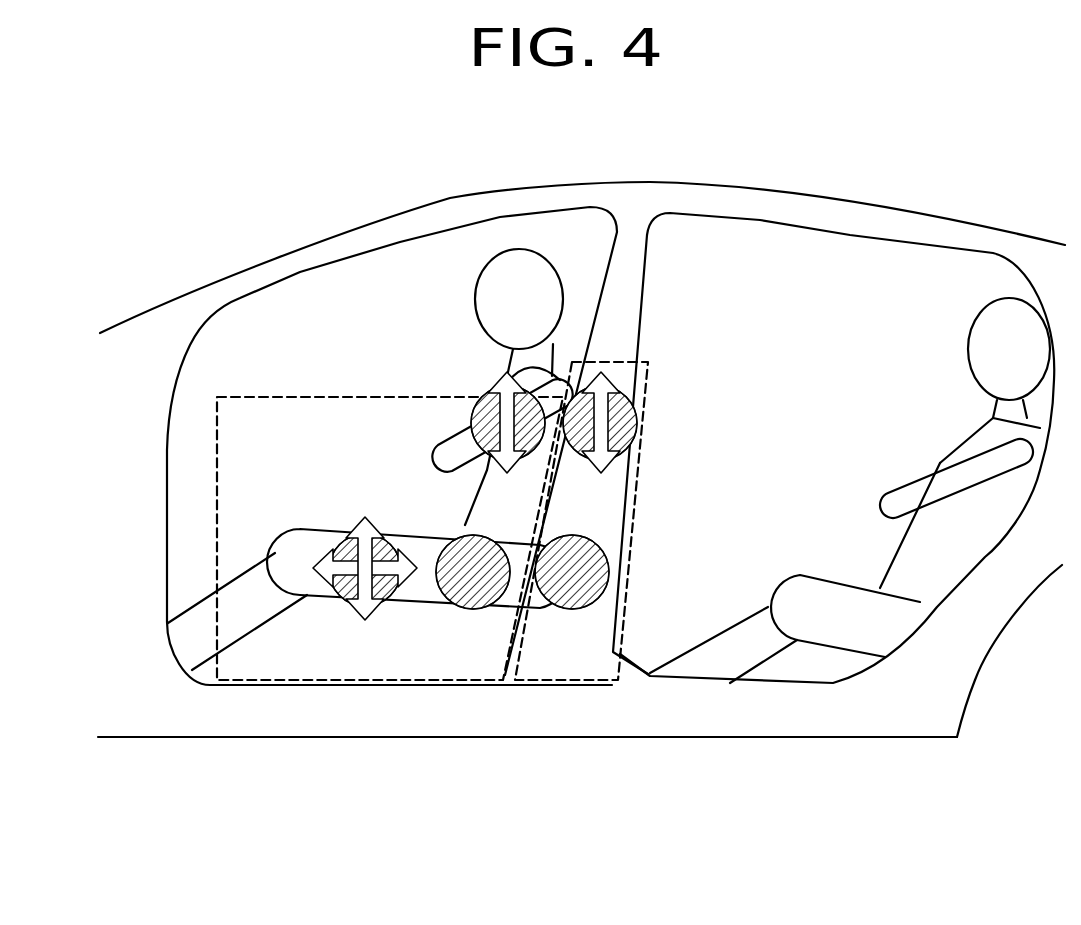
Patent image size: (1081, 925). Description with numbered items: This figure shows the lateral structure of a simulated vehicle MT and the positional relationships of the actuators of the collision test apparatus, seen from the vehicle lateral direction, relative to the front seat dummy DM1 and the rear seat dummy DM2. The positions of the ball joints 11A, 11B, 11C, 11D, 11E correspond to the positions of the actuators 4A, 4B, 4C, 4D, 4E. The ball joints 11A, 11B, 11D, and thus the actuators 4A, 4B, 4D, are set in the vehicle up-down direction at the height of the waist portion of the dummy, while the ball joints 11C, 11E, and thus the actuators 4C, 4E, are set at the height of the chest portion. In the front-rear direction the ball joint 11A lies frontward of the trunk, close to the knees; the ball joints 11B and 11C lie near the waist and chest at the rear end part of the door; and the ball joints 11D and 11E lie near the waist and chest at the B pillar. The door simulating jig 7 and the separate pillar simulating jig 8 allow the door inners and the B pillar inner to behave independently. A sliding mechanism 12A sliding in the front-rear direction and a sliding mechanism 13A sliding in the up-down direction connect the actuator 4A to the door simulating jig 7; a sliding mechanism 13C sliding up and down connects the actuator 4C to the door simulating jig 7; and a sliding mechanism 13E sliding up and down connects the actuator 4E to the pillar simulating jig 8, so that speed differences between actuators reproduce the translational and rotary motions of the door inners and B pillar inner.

The simulated vehicle MT is at (316, 234).
The front seat dummy DM1 is at (525, 268).
The rear seat dummy DM2 is at (1005, 322).
The door simulating jig 7 is at (213, 495).
The pillar simulating jig 8 is at (632, 528).
The ball joint 11A is at (340, 665).
The actuator 4A is at (322, 597).
The ball joint 11B is at (475, 668).
The actuator 4B is at (440, 592).
The ball joint 11C is at (426, 395).
The actuator 4C is at (471, 408).
The ball joint 11D is at (625, 666).
The actuator 4D is at (568, 609).
The ball joint 11E is at (655, 383).
The actuator 4E is at (618, 393).
The sliding mechanism 12A is at (325, 580).
The sliding mechanism 13A is at (369, 515).
The sliding mechanism 13C is at (498, 384).
The sliding mechanism 13E is at (610, 428).